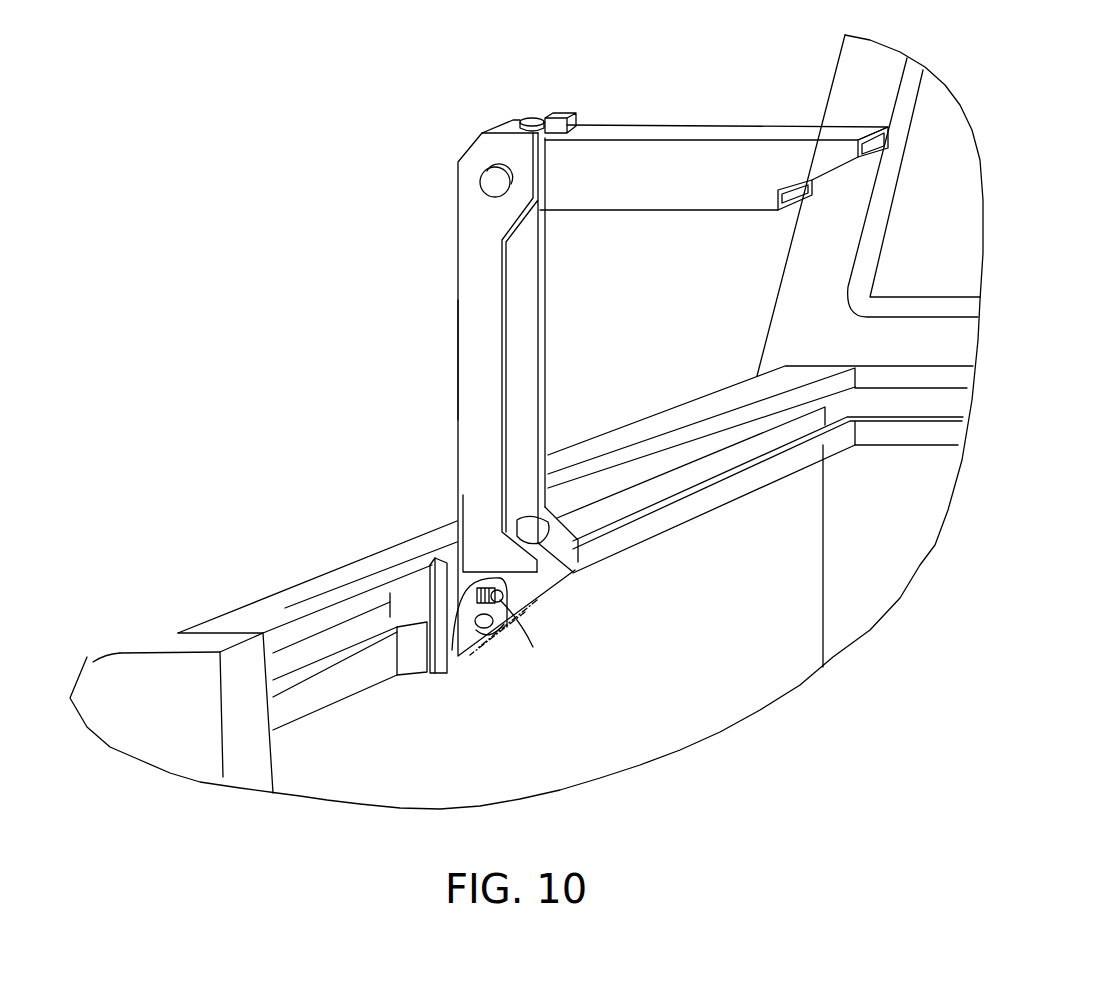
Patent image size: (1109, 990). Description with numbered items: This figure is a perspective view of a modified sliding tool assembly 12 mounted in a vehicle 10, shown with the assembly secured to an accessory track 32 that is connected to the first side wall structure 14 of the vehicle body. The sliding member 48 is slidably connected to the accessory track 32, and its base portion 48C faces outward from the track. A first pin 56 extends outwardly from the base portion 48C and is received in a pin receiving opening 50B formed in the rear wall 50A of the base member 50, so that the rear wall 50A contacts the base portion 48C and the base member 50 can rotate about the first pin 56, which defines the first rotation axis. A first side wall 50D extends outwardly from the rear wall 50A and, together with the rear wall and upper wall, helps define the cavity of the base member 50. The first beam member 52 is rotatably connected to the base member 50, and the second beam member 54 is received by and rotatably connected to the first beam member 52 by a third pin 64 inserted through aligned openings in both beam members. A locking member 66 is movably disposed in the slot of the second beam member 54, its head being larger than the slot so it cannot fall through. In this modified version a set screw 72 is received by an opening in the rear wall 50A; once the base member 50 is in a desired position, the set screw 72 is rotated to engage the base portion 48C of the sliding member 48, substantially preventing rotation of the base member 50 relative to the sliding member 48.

The vehicle 10 is at (881, 40).
The sliding tool assembly 12 is at (456, 390).
The first side wall structure 14 is at (640, 420).
The accessory track 32 is at (716, 520).
The sliding member 48 is at (415, 676).
The base portion 48C is at (455, 598).
The base member 50 is at (548, 612).
The rear wall 50A is at (522, 626).
The pin receiving opening 50B is at (486, 630).
The first side wall 50D is at (468, 582).
The first beam member 52 is at (457, 312).
The second beam member 54 is at (699, 125).
The first pin 56 is at (500, 645).
The third pin 64 is at (488, 183).
The locking member 66 is at (532, 118).
The set screw 72 is at (490, 586).